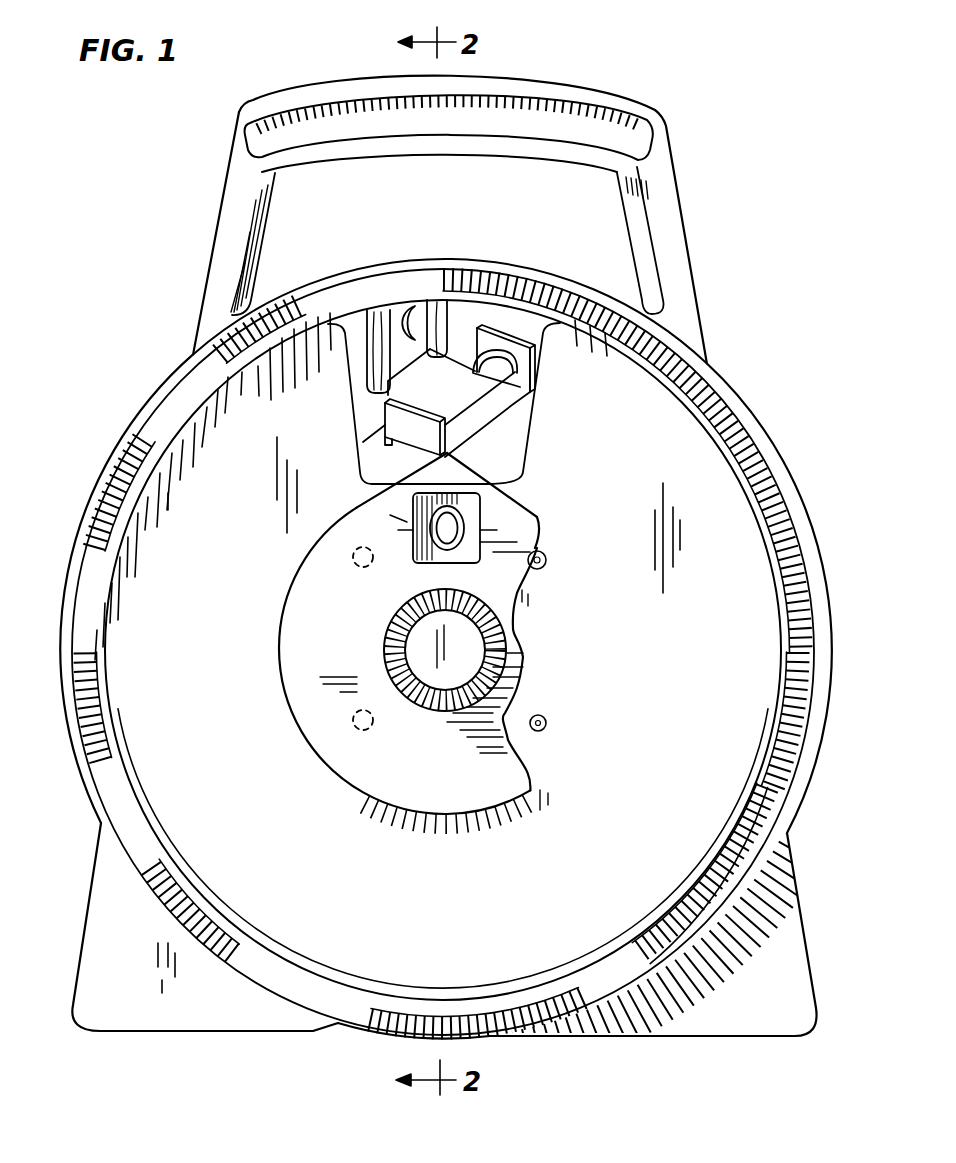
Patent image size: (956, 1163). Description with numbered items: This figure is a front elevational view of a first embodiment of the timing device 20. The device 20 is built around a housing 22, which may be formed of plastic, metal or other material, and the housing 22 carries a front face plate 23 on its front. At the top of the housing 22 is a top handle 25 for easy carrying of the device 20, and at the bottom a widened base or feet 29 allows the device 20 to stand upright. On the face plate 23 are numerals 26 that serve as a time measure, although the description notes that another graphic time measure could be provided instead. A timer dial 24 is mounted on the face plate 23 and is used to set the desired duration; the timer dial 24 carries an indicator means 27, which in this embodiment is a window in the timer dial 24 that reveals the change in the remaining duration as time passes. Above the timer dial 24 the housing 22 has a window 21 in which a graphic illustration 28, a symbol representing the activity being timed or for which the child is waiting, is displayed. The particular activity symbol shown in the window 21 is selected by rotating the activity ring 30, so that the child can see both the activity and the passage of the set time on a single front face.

The device 20 is at (720, 360).
The window 21 is at (367, 413).
The housing 22 is at (683, 269).
The front face plate 23 is at (686, 491).
The timer dial 24 is at (480, 777).
The top handle 25 is at (590, 100).
The numerals 26 is at (592, 750).
The indicator means 27 is at (470, 518).
The graphic illustration 28 is at (512, 337).
The base or feet 29 is at (672, 1007).
The activity ring 30 is at (97, 558).